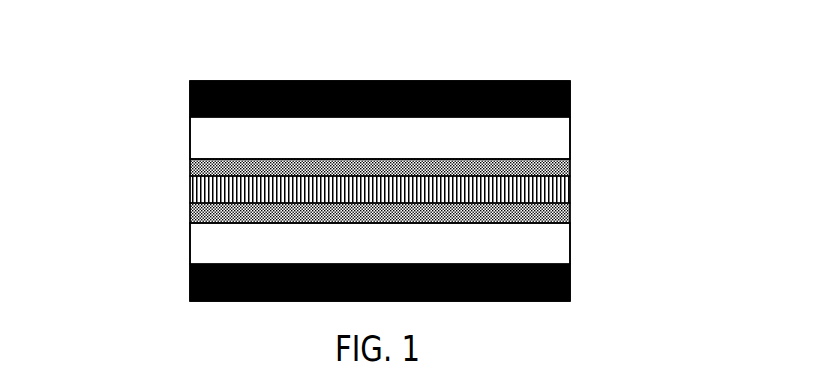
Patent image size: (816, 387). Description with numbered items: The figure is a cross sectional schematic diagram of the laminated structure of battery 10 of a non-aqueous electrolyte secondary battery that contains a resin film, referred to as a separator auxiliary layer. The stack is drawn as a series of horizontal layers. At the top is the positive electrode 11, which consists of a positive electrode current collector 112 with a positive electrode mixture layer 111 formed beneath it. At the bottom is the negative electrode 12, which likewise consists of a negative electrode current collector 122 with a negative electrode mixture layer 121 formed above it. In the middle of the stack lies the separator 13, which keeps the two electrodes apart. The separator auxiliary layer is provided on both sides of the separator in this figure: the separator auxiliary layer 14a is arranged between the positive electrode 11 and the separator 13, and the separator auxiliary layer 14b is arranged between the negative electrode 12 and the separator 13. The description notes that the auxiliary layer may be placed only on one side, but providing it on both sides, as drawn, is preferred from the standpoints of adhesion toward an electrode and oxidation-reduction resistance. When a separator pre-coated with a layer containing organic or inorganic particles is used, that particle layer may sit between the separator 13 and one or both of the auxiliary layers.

The laminated structure of battery 10 is at (395, 68).
The positive electrode 11 is at (656, 100).
The positive electrode current collector 112 is at (572, 100).
The positive electrode mixture layer 111 is at (560, 137).
The separator auxiliary layer 14a is at (202, 163).
The separator 13 is at (560, 190).
The separator auxiliary layer 14b is at (202, 209).
The negative electrode 12 is at (656, 252).
The negative electrode mixture layer 121 is at (560, 251).
The negative electrode current collector 122 is at (570, 287).